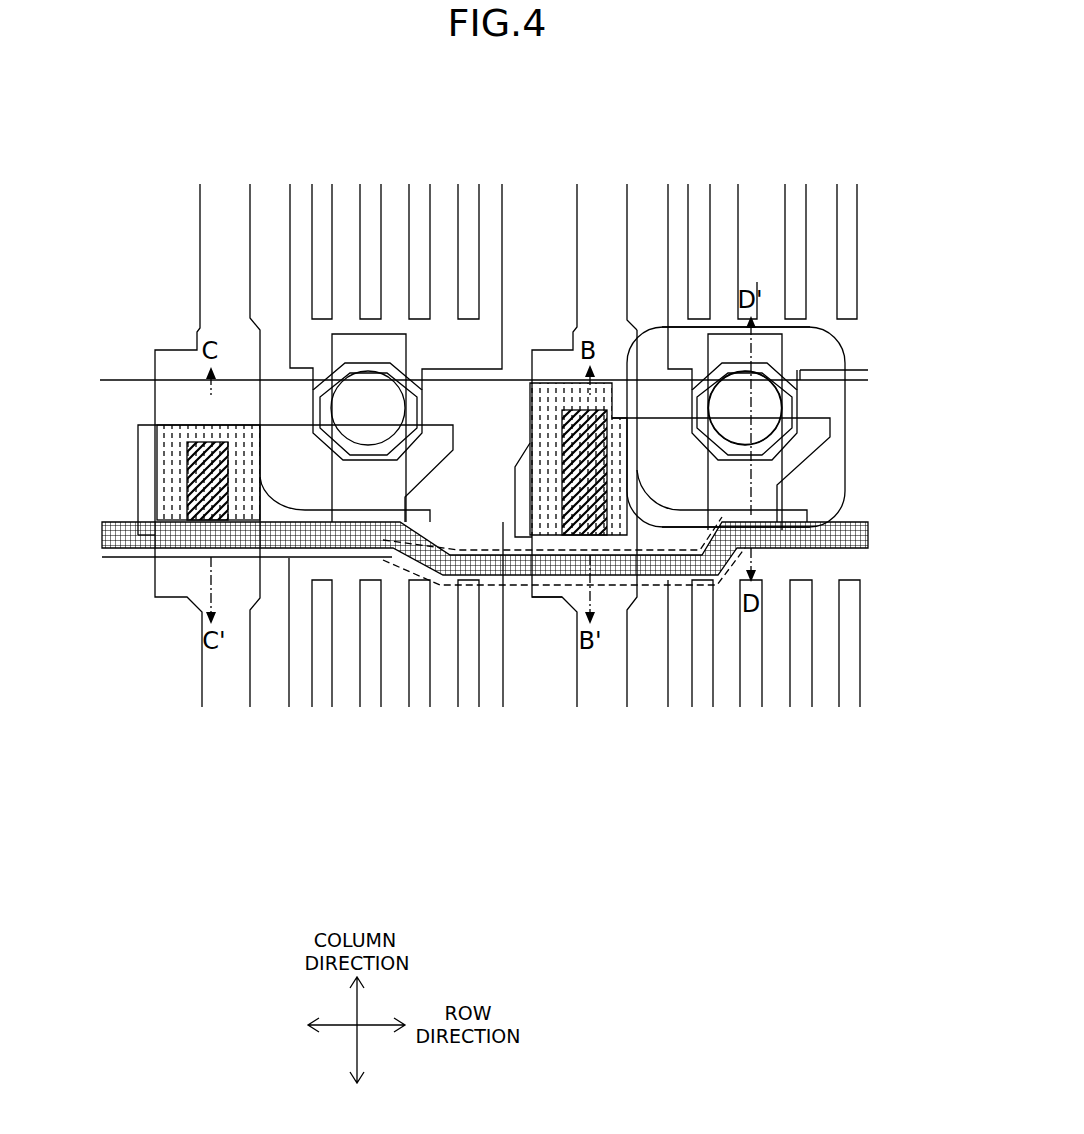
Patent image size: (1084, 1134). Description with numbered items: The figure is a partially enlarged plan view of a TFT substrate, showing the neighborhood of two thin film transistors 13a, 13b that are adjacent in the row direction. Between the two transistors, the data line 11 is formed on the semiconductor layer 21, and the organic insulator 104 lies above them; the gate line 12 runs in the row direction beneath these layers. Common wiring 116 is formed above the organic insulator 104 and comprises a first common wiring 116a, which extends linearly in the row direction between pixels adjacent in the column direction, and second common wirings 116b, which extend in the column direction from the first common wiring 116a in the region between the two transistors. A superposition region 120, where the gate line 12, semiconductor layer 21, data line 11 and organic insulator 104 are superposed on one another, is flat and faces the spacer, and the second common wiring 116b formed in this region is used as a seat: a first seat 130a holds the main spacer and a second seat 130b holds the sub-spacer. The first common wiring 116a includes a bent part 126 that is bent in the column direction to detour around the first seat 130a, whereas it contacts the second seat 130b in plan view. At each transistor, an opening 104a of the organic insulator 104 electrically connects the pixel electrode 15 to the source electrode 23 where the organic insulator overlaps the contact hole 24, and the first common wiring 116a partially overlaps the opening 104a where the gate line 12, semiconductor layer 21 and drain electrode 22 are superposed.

The data line 11 is at (602, 688).
The gate line 12 is at (105, 425).
The thin film transistor 13a is at (655, 326).
The thin film transistor 13b is at (278, 326).
The pixel electrode 15 is at (490, 688).
The semiconductor layer 21 is at (793, 463).
The drain electrode 22 is at (822, 525).
The source electrode 23 is at (770, 402).
The contact hole 24 is at (762, 340).
The organic insulator 104 is at (826, 336).
The opening 104a is at (797, 328).
The common wiring 116 is at (117, 550).
The first common wiring 116a is at (107, 530).
The second common wiring 116b is at (567, 493).
The superposition region 120 is at (548, 500).
The bent part 126 is at (660, 585).
The first seat 130a is at (555, 395).
The second seat 130b is at (190, 423).